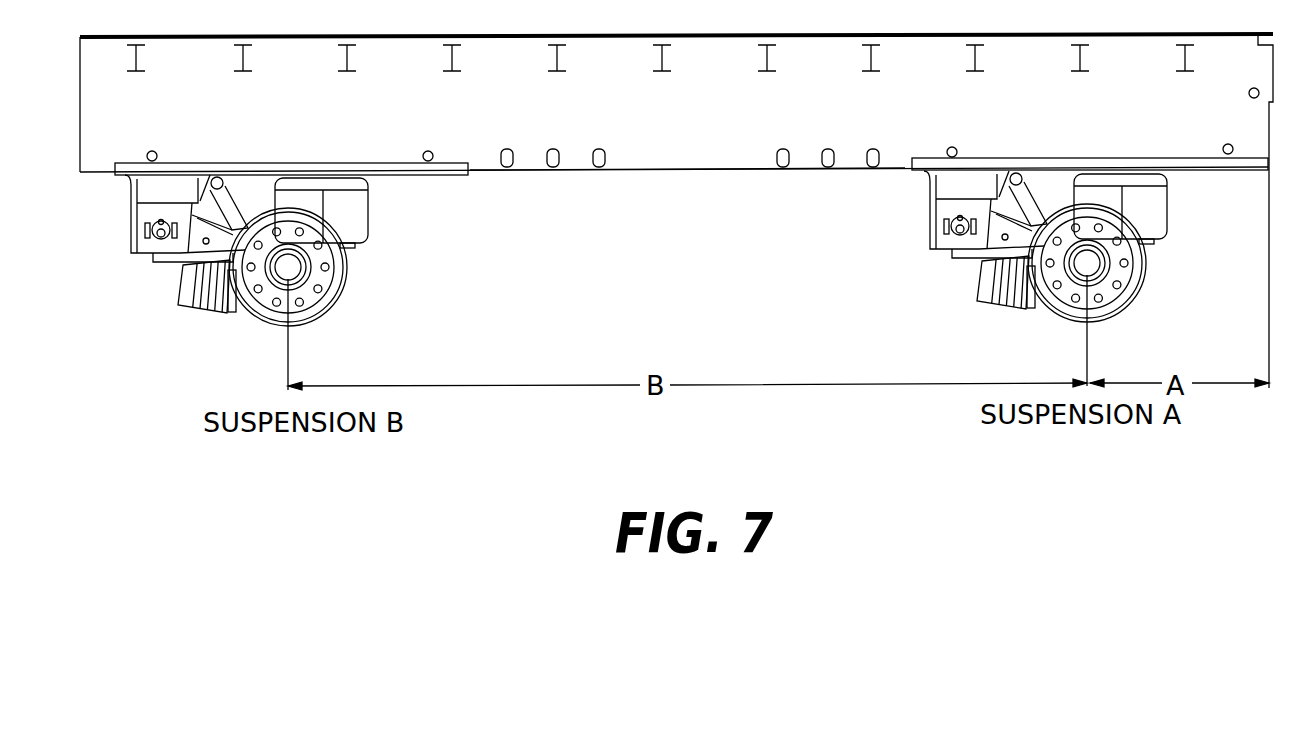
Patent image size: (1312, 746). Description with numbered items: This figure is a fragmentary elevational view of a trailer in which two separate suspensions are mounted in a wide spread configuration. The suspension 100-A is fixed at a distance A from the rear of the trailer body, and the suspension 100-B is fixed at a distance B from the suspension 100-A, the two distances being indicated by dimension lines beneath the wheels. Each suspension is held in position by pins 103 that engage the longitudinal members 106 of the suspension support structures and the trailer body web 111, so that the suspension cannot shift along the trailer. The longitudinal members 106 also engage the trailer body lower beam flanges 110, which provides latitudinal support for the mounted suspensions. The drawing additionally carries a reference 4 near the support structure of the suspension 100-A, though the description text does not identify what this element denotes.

The mounting plate of suspension A 4 is at (1185, 172).
The pins 103 is at (157, 152).
The longitudinal members 106 is at (385, 180).
The trailer body lower beam flanges 110 is at (586, 169).
The trailer body web 111 is at (507, 158).
The suspension 100-A is at (1146, 283).
The suspension 100-B is at (345, 292).